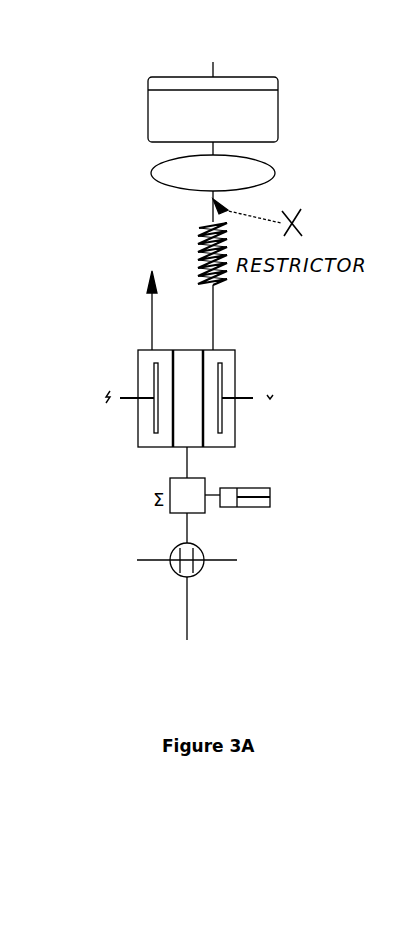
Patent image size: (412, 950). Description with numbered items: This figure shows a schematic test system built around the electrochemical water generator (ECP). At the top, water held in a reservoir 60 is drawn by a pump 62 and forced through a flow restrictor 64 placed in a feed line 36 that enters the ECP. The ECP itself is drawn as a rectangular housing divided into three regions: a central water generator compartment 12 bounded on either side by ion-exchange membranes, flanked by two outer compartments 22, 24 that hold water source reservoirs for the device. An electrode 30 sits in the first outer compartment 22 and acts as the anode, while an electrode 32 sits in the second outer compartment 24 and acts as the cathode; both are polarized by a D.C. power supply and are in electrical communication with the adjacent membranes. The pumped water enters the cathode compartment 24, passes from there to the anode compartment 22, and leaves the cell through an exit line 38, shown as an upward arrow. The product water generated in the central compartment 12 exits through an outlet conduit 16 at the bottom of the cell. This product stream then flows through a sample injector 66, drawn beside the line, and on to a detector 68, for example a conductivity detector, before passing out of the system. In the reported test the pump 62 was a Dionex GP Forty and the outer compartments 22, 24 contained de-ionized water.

The reservoir 60 is at (256, 73).
The pump 62 is at (275, 170).
The flow restrictor 64 is at (207, 238).
The line 36 is at (213, 330).
The line 38 is at (150, 318).
The water generator compartment 12 is at (190, 428).
The compartment 22 is at (150, 362).
The compartment 24 is at (237, 357).
The electrode 30 is at (153, 410).
The electrode 32 is at (220, 392).
The outlet conduit 16 is at (186, 464).
The sample injector 66 is at (250, 490).
The detector 68 is at (203, 551).